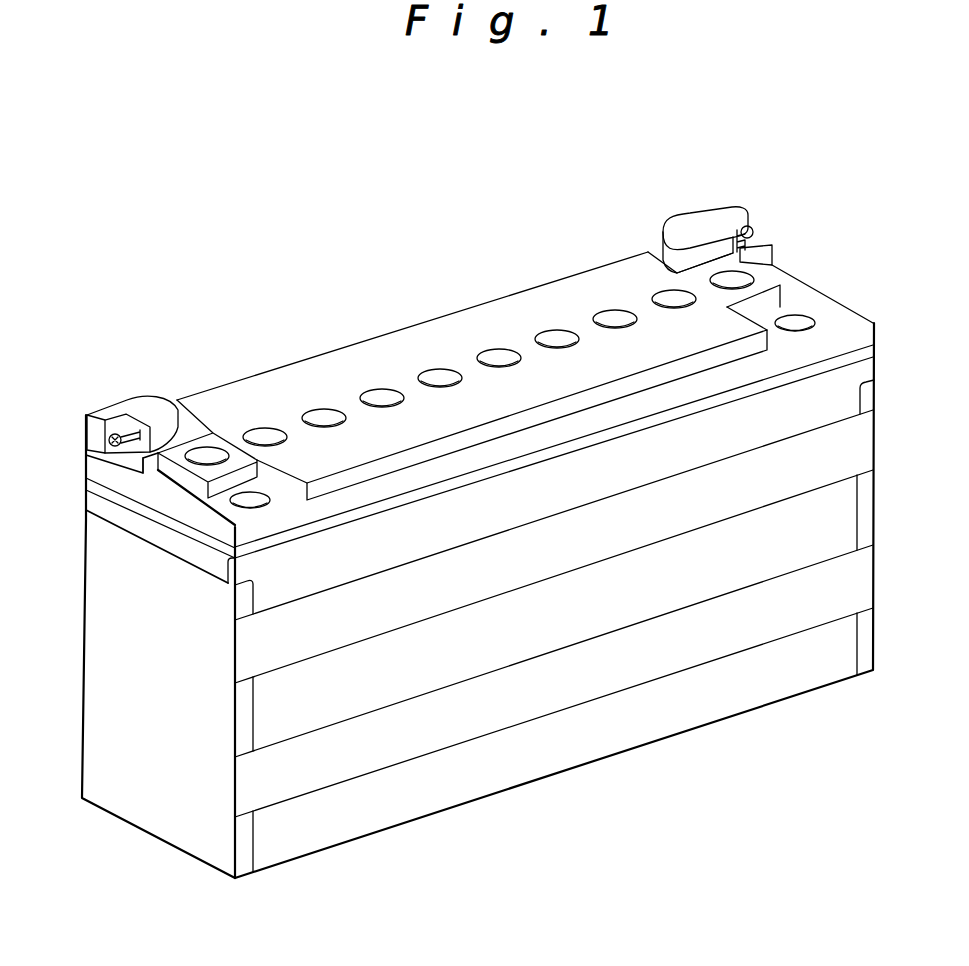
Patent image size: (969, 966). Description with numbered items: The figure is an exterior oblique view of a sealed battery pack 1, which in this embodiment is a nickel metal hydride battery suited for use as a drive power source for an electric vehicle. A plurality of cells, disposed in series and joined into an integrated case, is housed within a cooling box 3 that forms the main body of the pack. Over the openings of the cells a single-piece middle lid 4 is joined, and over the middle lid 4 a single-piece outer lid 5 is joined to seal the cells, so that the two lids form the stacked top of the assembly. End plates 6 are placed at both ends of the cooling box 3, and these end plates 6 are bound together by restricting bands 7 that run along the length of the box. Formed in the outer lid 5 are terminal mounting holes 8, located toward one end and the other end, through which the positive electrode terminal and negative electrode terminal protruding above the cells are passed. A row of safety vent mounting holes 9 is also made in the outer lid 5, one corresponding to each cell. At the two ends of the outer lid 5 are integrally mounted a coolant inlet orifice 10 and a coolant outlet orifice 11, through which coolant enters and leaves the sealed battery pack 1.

The sealed battery pack 1 is at (319, 320).
The cooling box 3 is at (432, 797).
The middle lid 4 is at (128, 505).
The outer lid 5 is at (502, 320).
The end plates 6 is at (188, 818).
The restricting bands 7 is at (548, 548).
The terminal mounting holes 8 is at (250, 500).
The safety vent mounting holes 9 is at (375, 395).
The coolant inlet orifice 10 is at (152, 410).
The coolant outlet orifice 11 is at (694, 223).